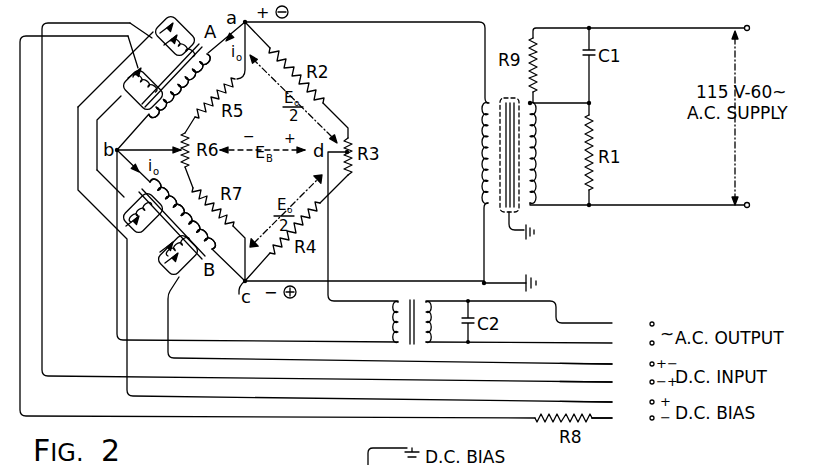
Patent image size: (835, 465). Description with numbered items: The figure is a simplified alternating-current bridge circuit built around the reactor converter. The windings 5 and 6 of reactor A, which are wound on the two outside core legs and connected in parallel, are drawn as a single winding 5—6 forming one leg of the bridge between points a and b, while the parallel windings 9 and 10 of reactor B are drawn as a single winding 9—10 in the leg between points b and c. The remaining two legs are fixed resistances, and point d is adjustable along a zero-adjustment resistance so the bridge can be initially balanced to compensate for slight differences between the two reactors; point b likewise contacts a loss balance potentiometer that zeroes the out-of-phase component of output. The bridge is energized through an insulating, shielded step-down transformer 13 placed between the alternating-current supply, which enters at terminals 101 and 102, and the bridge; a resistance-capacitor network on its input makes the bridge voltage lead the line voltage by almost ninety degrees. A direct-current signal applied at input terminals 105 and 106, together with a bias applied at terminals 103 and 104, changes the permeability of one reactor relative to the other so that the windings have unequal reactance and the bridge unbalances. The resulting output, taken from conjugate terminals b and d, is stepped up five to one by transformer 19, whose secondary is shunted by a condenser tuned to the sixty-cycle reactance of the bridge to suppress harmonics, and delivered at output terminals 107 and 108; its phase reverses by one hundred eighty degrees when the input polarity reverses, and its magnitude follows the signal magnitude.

The winding 5 is at (181, 87).
The winding 6 is at (181, 87).
The winding 9 is at (184, 213).
The winding 10 is at (184, 213).
The insulating and step down transformer 13 is at (509, 159).
The transformer 19 is at (400, 322).
The A.C. supply terminal 101 is at (688, 30).
The A.C. supply terminal 102 is at (688, 207).
The D.C. bias terminal (+) 103 is at (607, 402).
The D.C. bias terminal (-) 104 is at (623, 418).
The D.C. input terminal 105 is at (607, 364).
The D.C. input terminal 106 is at (607, 382).
The A.C. output terminal 107 is at (540, 343).
The A.C. output terminal 108 is at (540, 317).